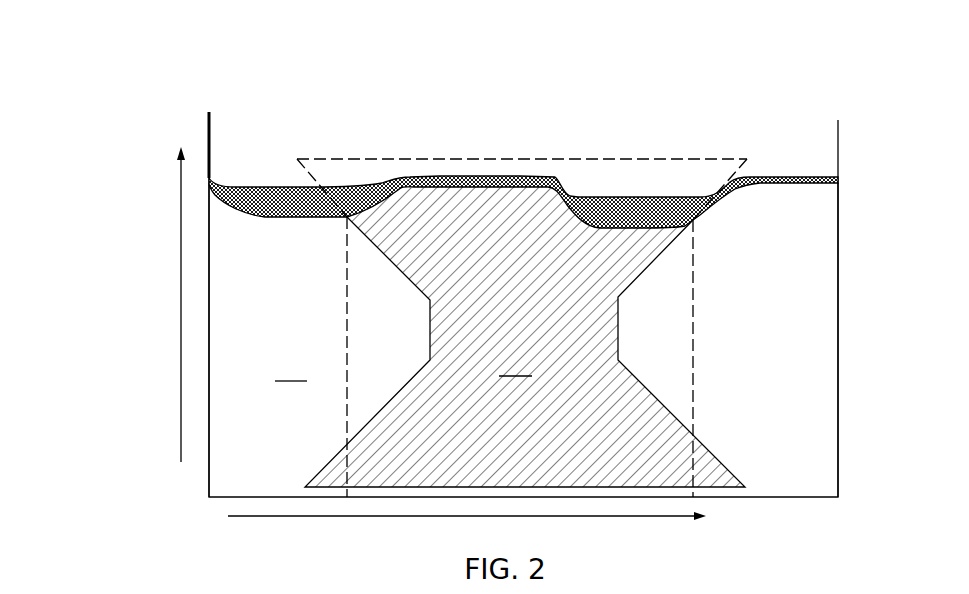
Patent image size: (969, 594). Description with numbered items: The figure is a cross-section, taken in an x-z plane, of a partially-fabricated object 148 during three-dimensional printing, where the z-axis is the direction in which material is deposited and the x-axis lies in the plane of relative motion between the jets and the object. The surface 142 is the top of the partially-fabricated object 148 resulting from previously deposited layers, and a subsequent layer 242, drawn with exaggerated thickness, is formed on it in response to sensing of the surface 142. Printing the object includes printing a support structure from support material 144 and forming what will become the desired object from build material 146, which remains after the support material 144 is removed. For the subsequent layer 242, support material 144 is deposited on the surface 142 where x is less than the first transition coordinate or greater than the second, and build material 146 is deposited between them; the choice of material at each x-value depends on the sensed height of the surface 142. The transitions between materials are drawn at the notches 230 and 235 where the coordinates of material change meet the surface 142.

The surface 142 is at (405, 177).
The subsequent layer 242 is at (603, 195).
The first edge notch 230 is at (347, 217).
The second edge notch 235 is at (695, 222).
The partially-fabricated object 148 is at (143, 353).
The support material 144 is at (523, 340).
The build material 146 is at (525, 337).